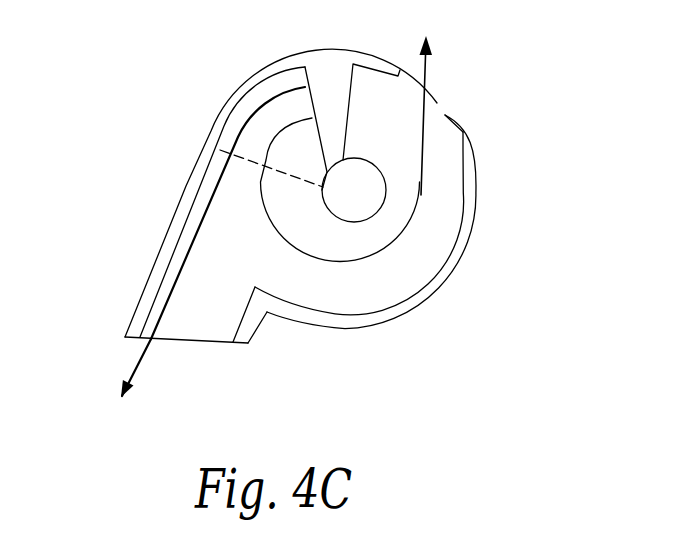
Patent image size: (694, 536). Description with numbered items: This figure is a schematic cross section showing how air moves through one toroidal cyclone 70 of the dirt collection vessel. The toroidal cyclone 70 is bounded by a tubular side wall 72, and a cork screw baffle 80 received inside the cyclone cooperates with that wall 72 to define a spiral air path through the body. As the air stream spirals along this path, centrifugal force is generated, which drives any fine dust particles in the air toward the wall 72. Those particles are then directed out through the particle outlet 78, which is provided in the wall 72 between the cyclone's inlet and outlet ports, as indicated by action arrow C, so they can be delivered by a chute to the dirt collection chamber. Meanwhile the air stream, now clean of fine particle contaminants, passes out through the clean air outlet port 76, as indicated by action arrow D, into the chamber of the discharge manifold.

The toroidal cyclone 70 is at (563, 177).
The tubular side wall 72 is at (466, 242).
The clean air outlet port 76 is at (463, 123).
The particle outlet 78 is at (203, 342).
The cork screw baffle 80 is at (343, 292).
The action arrow C is at (216, 183).
The action arrow D is at (428, 80).